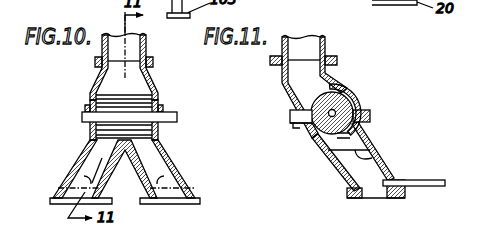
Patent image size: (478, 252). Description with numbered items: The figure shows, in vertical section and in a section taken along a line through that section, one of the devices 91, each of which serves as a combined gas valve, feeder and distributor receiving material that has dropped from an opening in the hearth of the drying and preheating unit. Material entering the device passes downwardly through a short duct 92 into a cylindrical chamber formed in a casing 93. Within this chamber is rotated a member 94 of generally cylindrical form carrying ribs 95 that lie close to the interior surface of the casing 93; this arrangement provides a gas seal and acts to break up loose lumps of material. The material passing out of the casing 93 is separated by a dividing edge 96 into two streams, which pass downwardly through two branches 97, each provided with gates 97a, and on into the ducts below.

In FIG. 10, the device 91 is at (160, 98).
In FIG. 11, the device 91 is at (372, 117).
In FIG. 10, the short duct 92 is at (143, 48).
In FIG. 11, the short duct 92 is at (325, 43).
In FIG. 11, the casing 93 is at (347, 92).
In FIG. 10, the member 94 is at (107, 107).
In FIG. 11, the member 94 is at (350, 103).
In FIG. 10, the ribs 95 is at (100, 127).
In FIG. 11, the ribs 95 is at (352, 131).
In FIG. 10, the dividing edge 96 is at (127, 150).
In FIG. 11, the dividing edge 96 is at (372, 150).
In FIG. 10, the branches 97 is at (84, 190).
In FIG. 11, the branches 97 is at (362, 186).
In FIG. 10, the gates 97a is at (87, 180).
In FIG. 11, the gates 97a is at (418, 164).